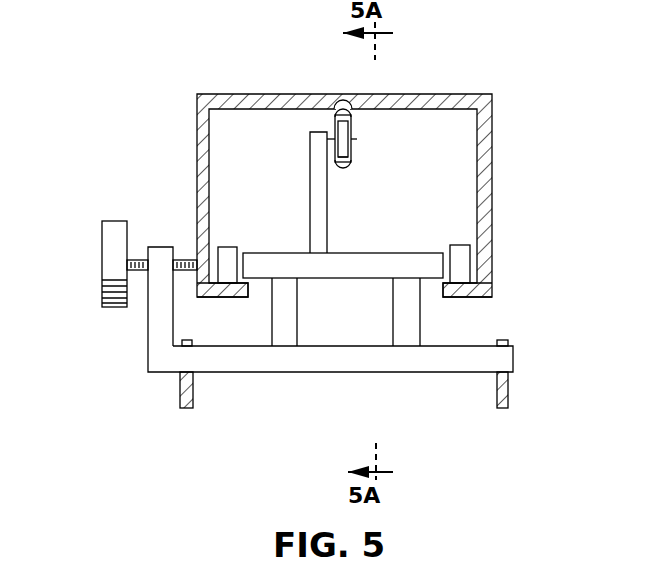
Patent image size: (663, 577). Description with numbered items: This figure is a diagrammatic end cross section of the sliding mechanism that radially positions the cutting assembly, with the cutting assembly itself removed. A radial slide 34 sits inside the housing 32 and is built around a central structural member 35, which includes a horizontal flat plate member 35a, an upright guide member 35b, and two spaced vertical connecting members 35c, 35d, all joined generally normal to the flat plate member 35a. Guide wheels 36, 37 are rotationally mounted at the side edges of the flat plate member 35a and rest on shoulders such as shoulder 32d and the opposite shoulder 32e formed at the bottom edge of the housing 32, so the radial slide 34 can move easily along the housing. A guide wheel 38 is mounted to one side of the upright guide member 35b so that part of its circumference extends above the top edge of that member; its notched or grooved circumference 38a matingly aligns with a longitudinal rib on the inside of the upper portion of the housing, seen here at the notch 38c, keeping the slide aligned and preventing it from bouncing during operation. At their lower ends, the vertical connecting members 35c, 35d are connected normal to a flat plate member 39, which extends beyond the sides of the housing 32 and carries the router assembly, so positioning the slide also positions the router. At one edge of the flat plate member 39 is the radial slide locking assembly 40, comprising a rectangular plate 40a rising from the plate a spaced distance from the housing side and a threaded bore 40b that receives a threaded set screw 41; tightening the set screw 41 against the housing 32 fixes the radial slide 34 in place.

The housing 32 is at (491, 150).
The shoulder 32d is at (240, 290).
The right flange of housing 32e is at (492, 290).
The radial slide 34 is at (440, 138).
The central structural member 35 is at (352, 278).
The horizontal flat plate member 35a is at (420, 252).
The upright guide member 35b is at (310, 192).
The vertical connecting member 35c is at (287, 330).
The vertical connecting member 35d is at (430, 330).
The guide wheel 36 is at (228, 256).
The guide wheel 37 is at (470, 262).
The guide wheel 38 is at (370, 167).
The notched or grooved circumference 38a is at (342, 166).
The notch in housing top wall 38c is at (343, 110).
The flat plate member 39 is at (500, 355).
The radial slide locking assembly 40 is at (137, 302).
The rectangular plate 40a is at (165, 355).
The threaded bore 40b is at (178, 258).
The threaded set screw 41 is at (112, 260).